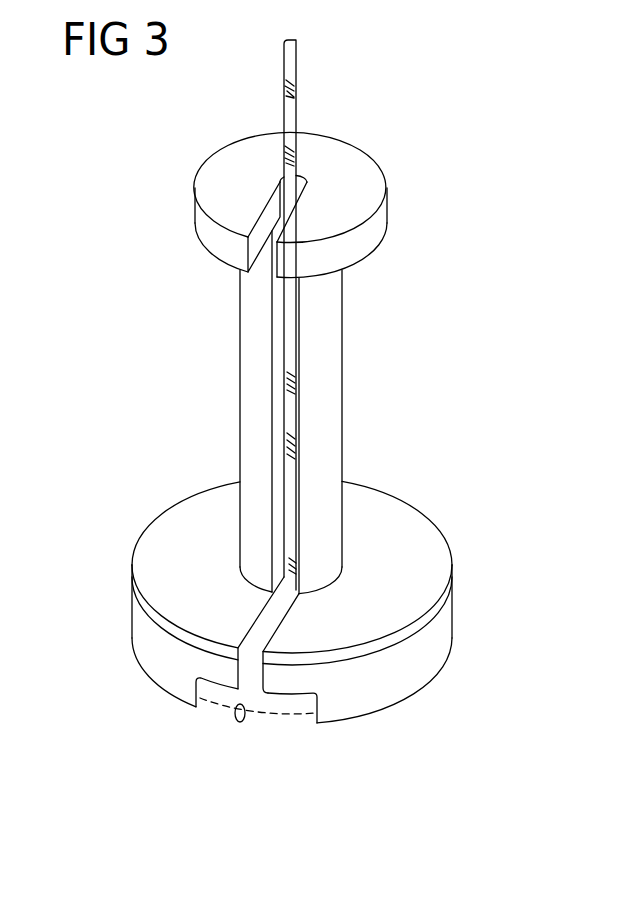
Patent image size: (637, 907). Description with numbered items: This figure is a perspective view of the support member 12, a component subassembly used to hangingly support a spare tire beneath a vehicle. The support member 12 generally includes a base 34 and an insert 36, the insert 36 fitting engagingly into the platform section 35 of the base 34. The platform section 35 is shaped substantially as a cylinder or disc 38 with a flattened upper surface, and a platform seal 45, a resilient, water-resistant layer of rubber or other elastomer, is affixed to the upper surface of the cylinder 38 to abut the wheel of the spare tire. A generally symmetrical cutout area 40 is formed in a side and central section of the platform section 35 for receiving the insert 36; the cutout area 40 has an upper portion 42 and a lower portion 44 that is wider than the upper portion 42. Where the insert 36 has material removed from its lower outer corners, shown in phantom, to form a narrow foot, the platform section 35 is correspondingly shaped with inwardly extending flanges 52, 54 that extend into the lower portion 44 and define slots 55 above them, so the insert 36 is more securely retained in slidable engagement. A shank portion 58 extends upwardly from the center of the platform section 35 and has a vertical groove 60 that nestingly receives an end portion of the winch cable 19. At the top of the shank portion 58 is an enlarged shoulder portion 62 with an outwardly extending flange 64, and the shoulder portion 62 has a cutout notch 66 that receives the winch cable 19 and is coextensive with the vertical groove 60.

The support member 12 is at (150, 352).
The winch cable 19 is at (322, 87).
The base 34 is at (417, 466).
The platform section 35 is at (112, 572).
The insert 36 is at (252, 766).
The cylinder 38 is at (432, 637).
The cutout area 40 is at (262, 720).
The upper portion 42 is at (238, 678).
The lower portion 44 is at (200, 705).
The platform seal 45 is at (412, 537).
The inwardly extending flange 52 is at (213, 710).
The inwardly extending flange 54 is at (307, 723).
The slots 55 is at (237, 723).
The shank portion 58 is at (338, 337).
The vertical groove 60 is at (278, 362).
The shoulder portion 62 is at (227, 180).
The outwardly extending flange 64 is at (377, 227).
The cutout notch 66 is at (251, 250).